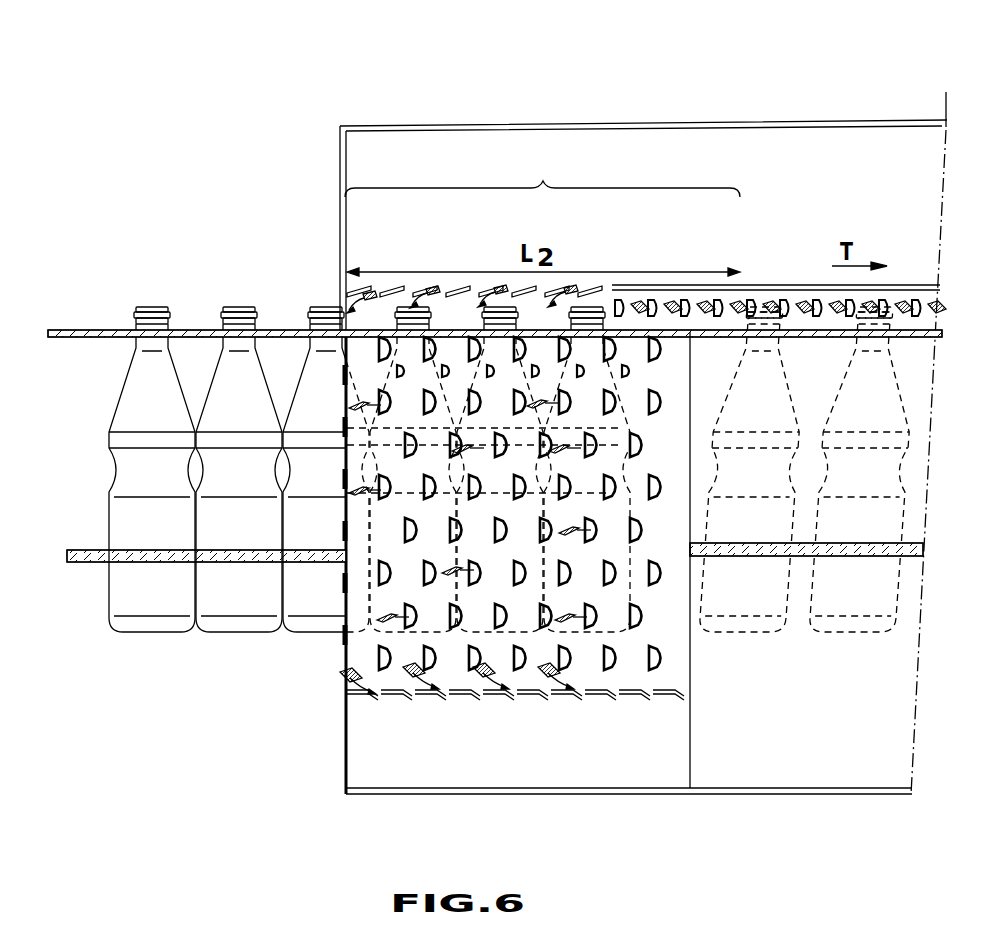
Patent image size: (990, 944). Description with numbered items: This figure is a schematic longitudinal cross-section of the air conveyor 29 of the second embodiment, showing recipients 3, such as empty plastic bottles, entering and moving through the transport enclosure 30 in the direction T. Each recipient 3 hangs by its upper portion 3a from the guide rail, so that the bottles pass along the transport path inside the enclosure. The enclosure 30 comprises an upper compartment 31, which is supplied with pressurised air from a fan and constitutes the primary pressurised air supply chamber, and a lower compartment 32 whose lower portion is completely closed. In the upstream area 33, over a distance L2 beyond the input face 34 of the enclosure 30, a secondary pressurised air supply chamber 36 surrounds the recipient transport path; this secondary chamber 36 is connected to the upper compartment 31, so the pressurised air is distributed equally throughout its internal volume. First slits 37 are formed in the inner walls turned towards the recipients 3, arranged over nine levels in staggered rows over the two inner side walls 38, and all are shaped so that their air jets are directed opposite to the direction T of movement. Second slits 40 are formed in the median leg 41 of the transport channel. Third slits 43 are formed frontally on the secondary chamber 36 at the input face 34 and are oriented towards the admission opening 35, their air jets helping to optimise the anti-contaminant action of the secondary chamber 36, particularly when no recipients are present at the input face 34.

The recipients 3 is at (218, 387).
The upper portion of recipient 3a is at (259, 319).
The air conveyor 29 is at (845, 107).
The transport enclosure 30 is at (448, 125).
The upper compartment 31 is at (828, 194).
The lower compartment 32 is at (828, 710).
The upstream area 33 is at (542, 175).
The input face 34 is at (347, 708).
The admission opening 35 is at (345, 519).
The secondary chamber 36 is at (498, 759).
The first slits 37 is at (663, 396).
The inner side walls 38 is at (663, 447).
The second slits 40 is at (420, 288).
The median leg 41 is at (672, 276).
The third slits 43 is at (347, 602).